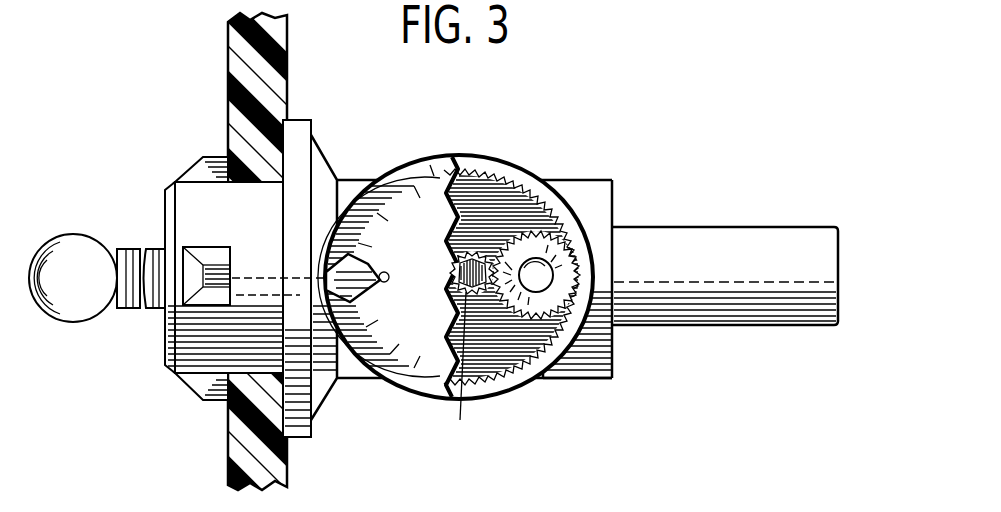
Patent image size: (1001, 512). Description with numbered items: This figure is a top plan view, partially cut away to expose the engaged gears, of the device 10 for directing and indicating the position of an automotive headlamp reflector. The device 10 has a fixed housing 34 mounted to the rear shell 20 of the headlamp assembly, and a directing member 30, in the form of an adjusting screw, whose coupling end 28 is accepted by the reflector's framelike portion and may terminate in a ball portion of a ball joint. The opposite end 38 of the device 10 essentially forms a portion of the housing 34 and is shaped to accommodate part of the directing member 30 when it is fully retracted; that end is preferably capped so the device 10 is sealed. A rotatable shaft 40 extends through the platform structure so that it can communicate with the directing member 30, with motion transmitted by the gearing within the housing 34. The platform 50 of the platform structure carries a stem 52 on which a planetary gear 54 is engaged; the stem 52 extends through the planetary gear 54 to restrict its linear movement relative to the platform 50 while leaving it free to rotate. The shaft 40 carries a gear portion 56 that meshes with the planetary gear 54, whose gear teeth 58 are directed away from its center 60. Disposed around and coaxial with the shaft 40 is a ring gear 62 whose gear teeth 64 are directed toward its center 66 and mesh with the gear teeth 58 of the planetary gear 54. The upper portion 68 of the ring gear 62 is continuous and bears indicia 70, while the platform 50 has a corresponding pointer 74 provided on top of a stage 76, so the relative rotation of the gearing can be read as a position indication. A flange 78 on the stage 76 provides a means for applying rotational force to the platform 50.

The device 10 is at (622, 152).
The rear shell 20 is at (284, 57).
The coupling end 28 is at (63, 262).
The directing member 30 is at (122, 328).
The housing 34 is at (578, 193).
The opposite end 38 is at (838, 298).
The rotatable shaft 40 is at (474, 256).
The platform 50 is at (363, 355).
The stem 52 is at (538, 282).
The planetary gear 54 is at (592, 380).
The gear portion 56 is at (484, 258).
The gear teeth 58 is at (553, 243).
The center 60 is at (522, 294).
The ring gear 62 is at (468, 162).
The gear teeth 64 is at (523, 372).
The center 66 is at (458, 370).
The upper portion 68 is at (406, 178).
The indicia 70 is at (417, 352).
The pointer 74 is at (389, 278).
The stage 76 is at (345, 235).
The flange 78 is at (340, 257).